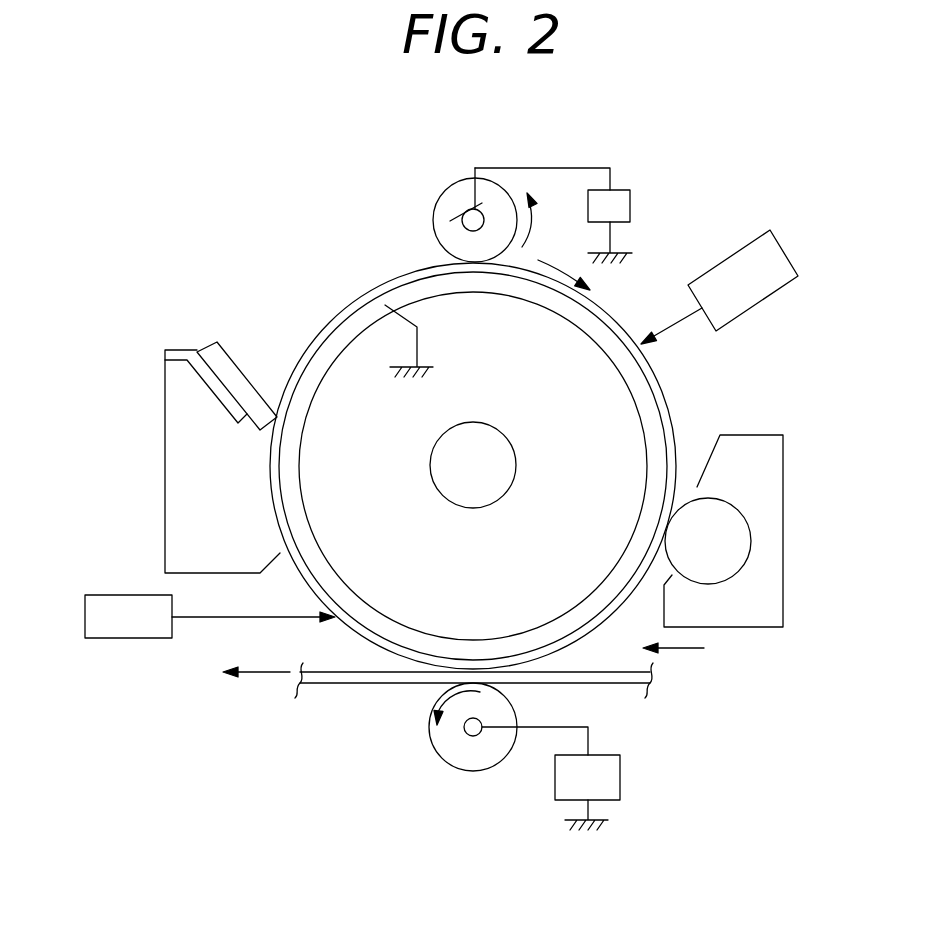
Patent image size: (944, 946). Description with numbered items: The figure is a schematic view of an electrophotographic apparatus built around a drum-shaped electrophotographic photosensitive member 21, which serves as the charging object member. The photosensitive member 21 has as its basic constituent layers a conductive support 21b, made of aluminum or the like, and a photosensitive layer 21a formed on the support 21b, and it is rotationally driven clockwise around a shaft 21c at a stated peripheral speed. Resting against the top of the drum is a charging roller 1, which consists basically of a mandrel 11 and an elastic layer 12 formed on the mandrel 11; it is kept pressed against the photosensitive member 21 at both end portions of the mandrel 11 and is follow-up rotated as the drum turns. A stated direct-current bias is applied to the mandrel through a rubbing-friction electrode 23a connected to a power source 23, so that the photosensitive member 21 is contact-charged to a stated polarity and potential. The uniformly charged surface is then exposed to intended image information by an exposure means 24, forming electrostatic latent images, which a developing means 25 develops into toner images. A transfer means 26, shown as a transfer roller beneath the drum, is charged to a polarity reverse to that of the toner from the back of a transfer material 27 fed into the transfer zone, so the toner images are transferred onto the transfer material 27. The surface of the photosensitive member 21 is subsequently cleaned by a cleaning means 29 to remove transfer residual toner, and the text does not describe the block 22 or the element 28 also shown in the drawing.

The charging roller 1 is at (353, 145).
The mandrel 11 is at (470, 228).
The elastic layer 12 is at (445, 203).
The electrophotographic photosensitive member 21 is at (234, 240).
The photosensitive layer 21a is at (352, 308).
The support 21b is at (347, 333).
The shaft 21c is at (465, 492).
The transfer bias power supply 22 is at (551, 778).
The power source 23 is at (553, 215).
The rubbing-friction electrode 23a is at (467, 212).
The exposure means 24 is at (719, 287).
The developing means 25 is at (746, 440).
The transfer means 26 is at (473, 771).
The transfer material 27 is at (328, 683).
The pre-exposure device 28 is at (210, 616).
The cleaning means 29 is at (172, 485).